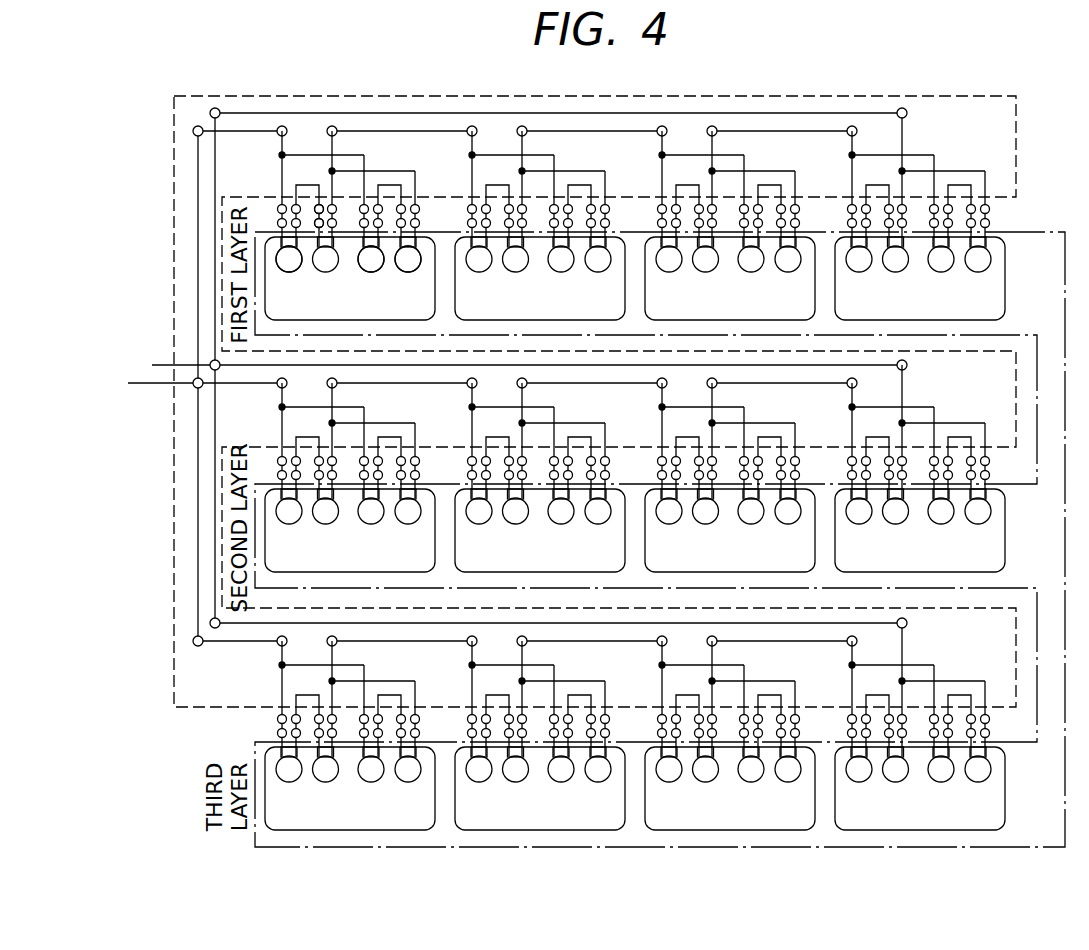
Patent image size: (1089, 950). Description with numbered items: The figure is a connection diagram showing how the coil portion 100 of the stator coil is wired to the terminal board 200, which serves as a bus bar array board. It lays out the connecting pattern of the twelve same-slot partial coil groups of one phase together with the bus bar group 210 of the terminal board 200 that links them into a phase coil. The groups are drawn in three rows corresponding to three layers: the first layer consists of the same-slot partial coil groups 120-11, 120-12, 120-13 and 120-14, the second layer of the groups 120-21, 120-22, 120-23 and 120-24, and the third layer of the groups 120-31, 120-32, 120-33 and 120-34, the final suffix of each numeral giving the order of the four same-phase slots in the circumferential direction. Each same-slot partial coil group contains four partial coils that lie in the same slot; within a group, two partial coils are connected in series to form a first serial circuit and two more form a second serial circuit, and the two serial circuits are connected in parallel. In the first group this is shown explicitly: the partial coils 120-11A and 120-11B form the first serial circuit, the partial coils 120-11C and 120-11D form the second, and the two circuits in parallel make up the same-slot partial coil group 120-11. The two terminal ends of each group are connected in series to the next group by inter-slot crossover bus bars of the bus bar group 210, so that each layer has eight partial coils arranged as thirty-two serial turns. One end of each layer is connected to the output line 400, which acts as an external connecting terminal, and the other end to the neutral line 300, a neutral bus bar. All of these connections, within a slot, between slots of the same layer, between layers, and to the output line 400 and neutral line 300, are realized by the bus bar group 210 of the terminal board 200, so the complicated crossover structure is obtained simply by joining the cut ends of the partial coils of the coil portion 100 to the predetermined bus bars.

The coil portion 100 is at (258, 750).
The terminal board 200 is at (173, 588).
The bus bar group 210 is at (281, 423).
The neutral line 300 is at (153, 364).
The output line 400 is at (145, 382).
The same-slot partial coil group 120-11 is at (350, 225).
The same-slot partial coil group 120-12 is at (540, 278).
The same-slot partial coil group 120-13 is at (730, 278).
The same-slot partial coil group 120-14 is at (920, 278).
The same-slot partial coil group 120-21 is at (350, 530).
The same-slot partial coil group 120-22 is at (540, 530).
The same-slot partial coil group 120-23 is at (730, 530).
The same-slot partial coil group 120-24 is at (920, 530).
The same-slot partial coil group 120-31 is at (350, 788).
The same-slot partial coil group 120-32 is at (540, 788).
The same-slot partial coil group 120-33 is at (730, 788).
The same-slot partial coil group 120-34 is at (920, 788).
The partial coil 120-11A is at (274, 258).
The partial coil 120-11B is at (306, 258).
The partial coil 120-11C is at (360, 280).
The partial coil 120-11D is at (436, 298).